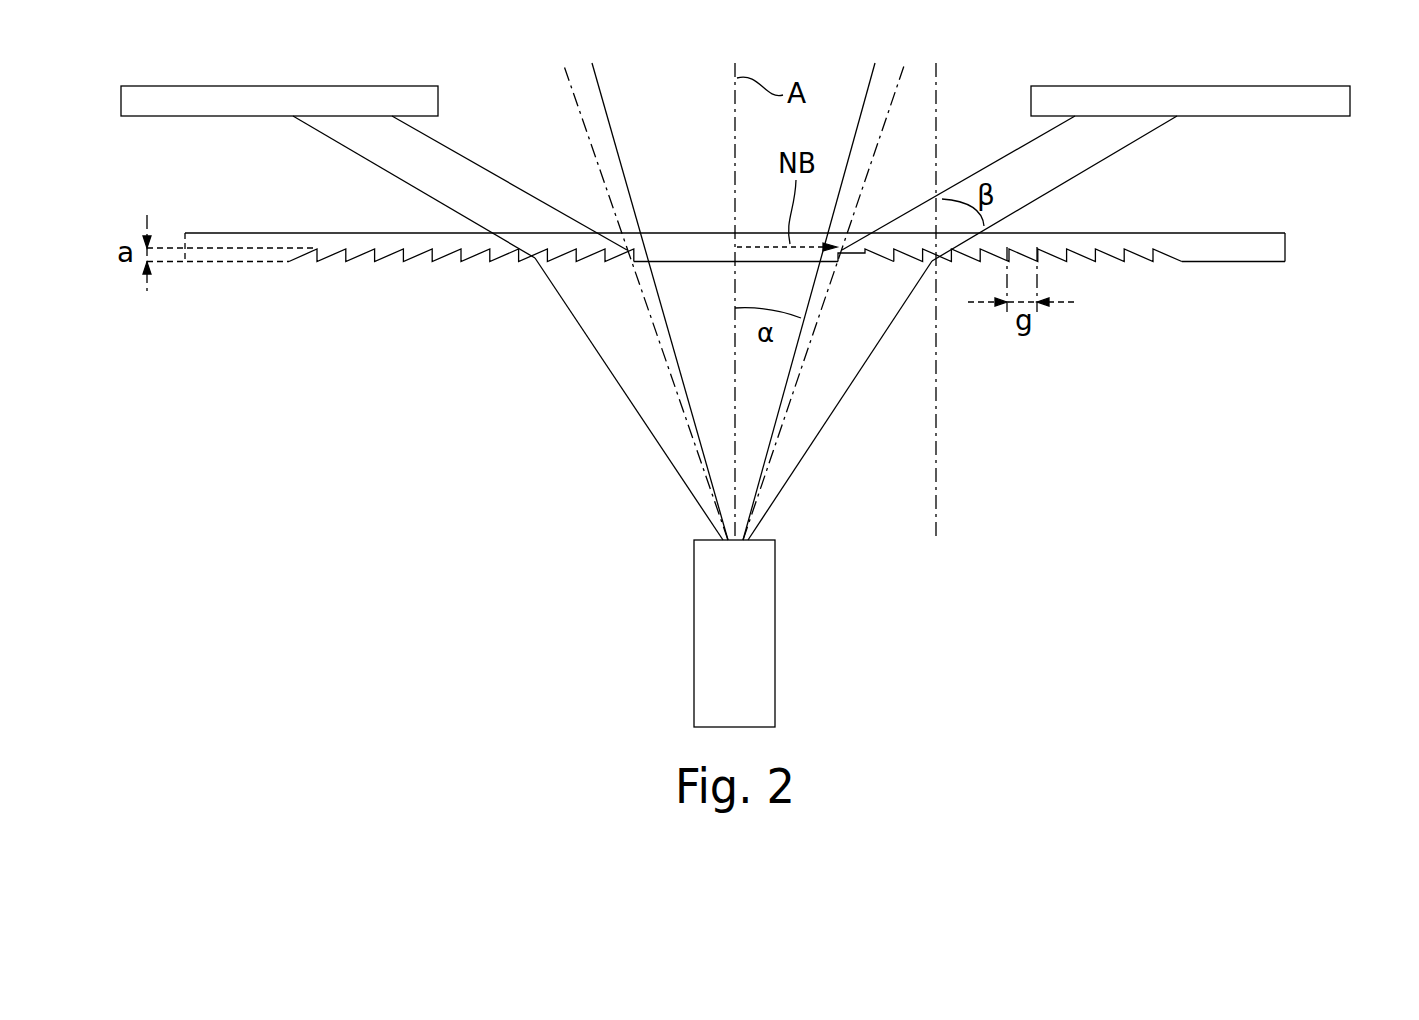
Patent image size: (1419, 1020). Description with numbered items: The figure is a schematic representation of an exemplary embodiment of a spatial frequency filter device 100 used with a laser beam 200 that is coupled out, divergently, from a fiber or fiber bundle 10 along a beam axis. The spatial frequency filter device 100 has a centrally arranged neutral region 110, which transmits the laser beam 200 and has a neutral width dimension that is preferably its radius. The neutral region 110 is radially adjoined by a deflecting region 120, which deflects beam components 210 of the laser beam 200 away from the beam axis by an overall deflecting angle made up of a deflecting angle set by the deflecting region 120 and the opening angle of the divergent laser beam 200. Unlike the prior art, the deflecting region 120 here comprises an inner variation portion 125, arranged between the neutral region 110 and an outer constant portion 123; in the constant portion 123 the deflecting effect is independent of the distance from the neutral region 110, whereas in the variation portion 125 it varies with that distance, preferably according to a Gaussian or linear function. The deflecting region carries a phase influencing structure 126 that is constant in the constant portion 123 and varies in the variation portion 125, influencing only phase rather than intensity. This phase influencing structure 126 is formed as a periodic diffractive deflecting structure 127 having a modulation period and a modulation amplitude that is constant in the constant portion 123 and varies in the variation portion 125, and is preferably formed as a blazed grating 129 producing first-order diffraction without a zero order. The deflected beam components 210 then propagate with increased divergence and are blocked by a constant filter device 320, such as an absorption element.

The fiber or fiber bundle 10 is at (776, 618).
The spatial frequency filter device 100 is at (800, 242).
The neutral region 110 is at (706, 206).
The deflecting region 120 is at (1010, 339).
The constant portion 123 is at (1138, 282).
The variation portion 125 is at (870, 299).
The phase influencing structure 126 is at (461, 322).
The diffractive deflecting structure 127 is at (461, 322).
The blazed grating 129 is at (423, 284).
The laser beam 200 is at (590, 435).
The beam components 210 is at (700, 464).
The constant filter device 320 is at (1323, 118).